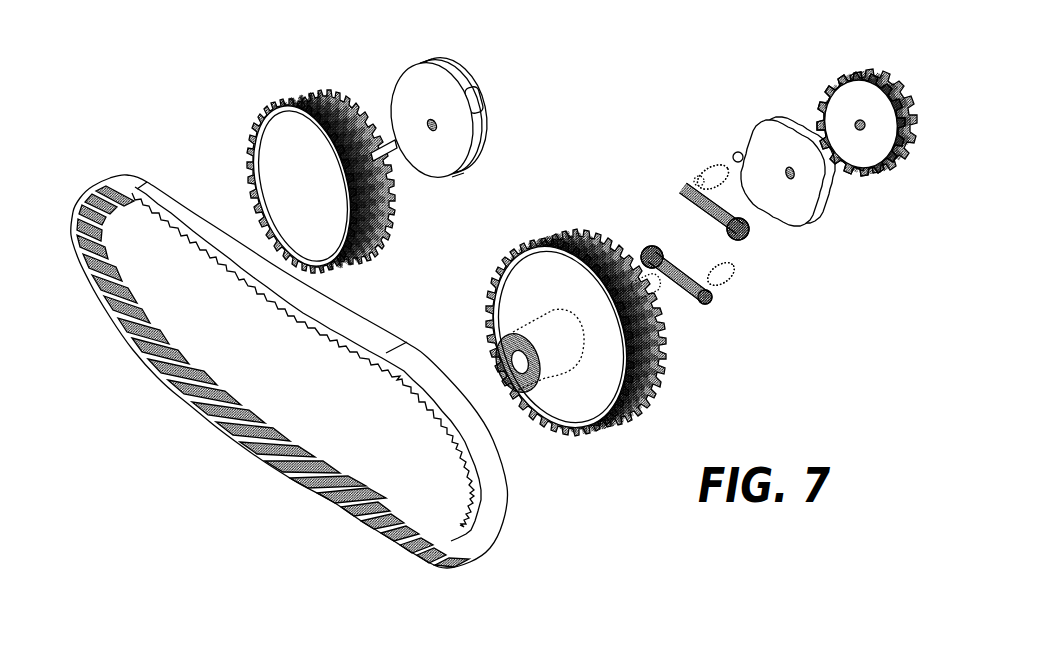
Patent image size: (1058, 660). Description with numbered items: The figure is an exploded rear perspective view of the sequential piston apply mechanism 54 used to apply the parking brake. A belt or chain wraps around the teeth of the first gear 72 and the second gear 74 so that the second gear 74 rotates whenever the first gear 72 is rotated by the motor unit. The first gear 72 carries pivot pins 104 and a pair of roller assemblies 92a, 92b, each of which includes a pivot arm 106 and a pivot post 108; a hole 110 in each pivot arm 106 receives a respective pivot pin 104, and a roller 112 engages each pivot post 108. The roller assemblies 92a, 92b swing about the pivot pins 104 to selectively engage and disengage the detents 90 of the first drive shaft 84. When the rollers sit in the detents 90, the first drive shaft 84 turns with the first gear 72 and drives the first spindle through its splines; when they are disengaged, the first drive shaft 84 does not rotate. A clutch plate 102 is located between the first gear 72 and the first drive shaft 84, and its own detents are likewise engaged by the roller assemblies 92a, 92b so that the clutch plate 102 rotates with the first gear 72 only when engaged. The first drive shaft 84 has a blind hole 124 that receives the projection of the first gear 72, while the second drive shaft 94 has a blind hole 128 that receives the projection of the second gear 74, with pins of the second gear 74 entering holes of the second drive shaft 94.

The sequential piston apply mechanism 54 is at (222, 73).
The first gear 72 is at (596, 412).
The second gear 74 is at (286, 138).
The first drive shaft 84 is at (874, 86).
The detents 90 is at (845, 76).
The roller assembly 92a is at (600, 146).
The roller assembly 92b is at (766, 373).
The second drive shaft 94 is at (408, 84).
The clutch plate 102 is at (750, 128).
The pivot pins 104 is at (636, 289).
The pivot arm 106 is at (683, 206).
The pivot post 108 is at (713, 163).
The hole 110 is at (650, 262).
The roller 112 is at (696, 176).
The blind hole 124 is at (862, 131).
The blind hole 128 is at (436, 130).